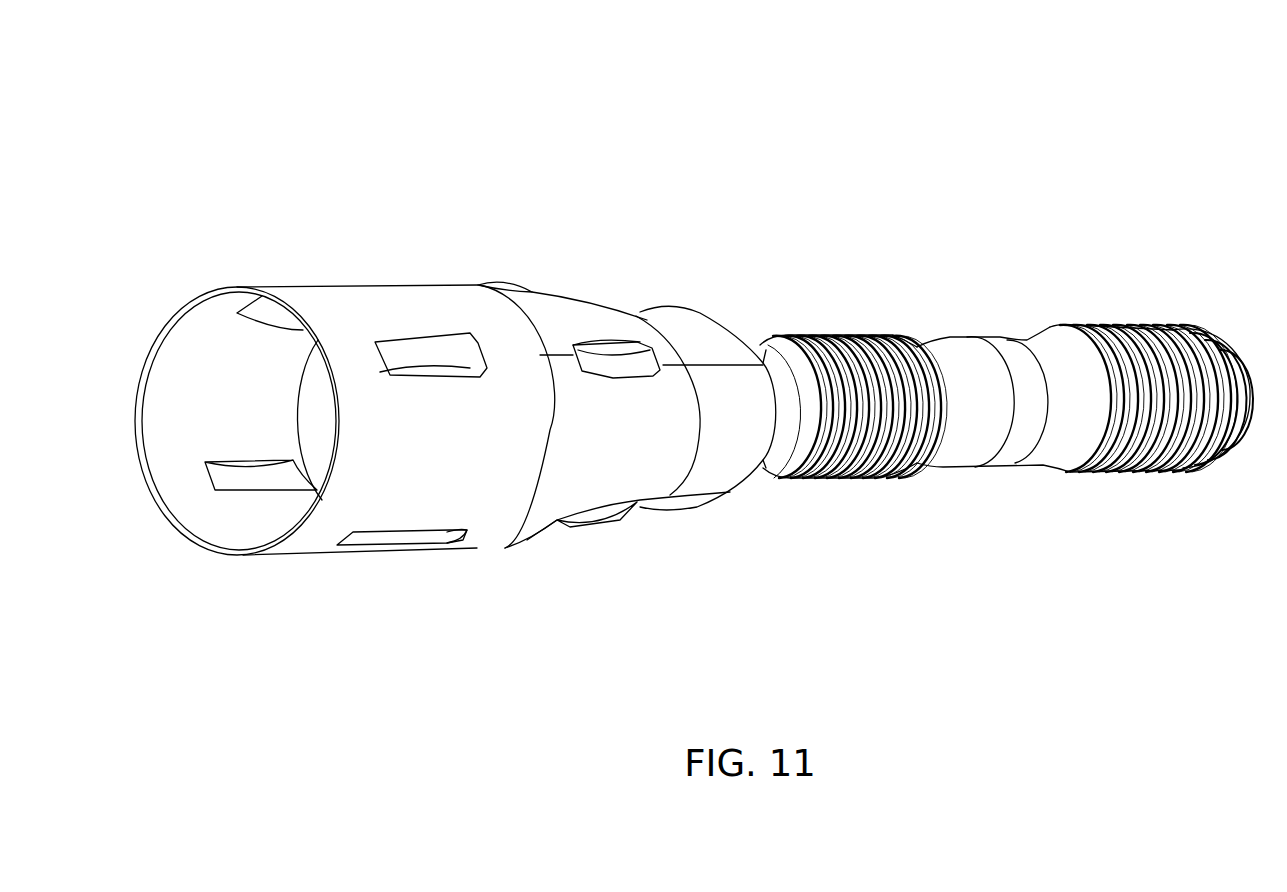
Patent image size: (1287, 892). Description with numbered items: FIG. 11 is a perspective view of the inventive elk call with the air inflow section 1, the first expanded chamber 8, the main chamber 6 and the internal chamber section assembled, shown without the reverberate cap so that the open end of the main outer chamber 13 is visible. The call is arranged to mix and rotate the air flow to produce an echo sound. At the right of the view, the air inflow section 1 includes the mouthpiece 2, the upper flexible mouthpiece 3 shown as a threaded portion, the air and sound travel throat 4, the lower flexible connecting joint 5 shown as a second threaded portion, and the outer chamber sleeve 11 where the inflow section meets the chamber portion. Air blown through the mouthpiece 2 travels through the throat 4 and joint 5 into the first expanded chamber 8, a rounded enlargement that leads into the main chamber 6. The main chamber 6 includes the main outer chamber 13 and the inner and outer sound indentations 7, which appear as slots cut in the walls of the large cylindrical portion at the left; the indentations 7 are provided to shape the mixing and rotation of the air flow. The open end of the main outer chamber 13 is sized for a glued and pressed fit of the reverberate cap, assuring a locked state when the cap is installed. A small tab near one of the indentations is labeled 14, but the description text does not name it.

The air inflow section 1 is at (1098, 257).
The mouthpiece 2 is at (1233, 437).
The upper flexible mouthpiece 3 is at (1140, 443).
The air and sound travel throat 4 is at (1010, 437).
The lower flexible connecting joint 5 is at (850, 460).
The main chamber 6 is at (512, 220).
The inner and outer sound indentations 7 is at (418, 353).
The first expanded chamber 8 is at (717, 343).
The outer chamber sleeve 11 is at (797, 397).
The main outer chamber 13 is at (635, 440).
The latch tab 14 is at (460, 530).